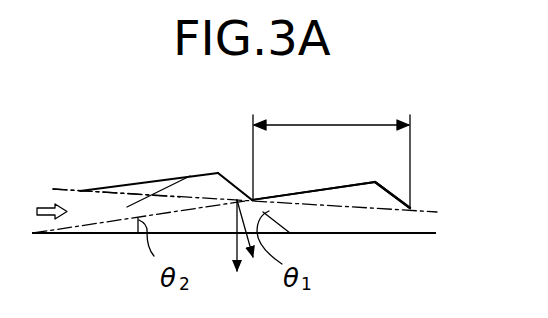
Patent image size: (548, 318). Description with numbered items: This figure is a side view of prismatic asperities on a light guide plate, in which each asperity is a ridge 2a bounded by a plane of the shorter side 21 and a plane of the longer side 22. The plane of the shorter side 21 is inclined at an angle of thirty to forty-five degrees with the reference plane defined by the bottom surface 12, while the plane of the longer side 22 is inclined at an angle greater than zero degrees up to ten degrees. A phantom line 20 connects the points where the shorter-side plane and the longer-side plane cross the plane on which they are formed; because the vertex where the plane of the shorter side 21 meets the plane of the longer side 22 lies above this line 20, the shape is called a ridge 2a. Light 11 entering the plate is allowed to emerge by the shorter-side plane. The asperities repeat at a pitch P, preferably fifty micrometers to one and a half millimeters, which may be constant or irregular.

The ridge 2a is at (211, 172).
The incident light 11 is at (141, 172).
The bottom surface 12 is at (377, 234).
The line 20 is at (437, 212).
The plane of the shorter side 21 is at (397, 197).
The plane of the longer side 22 is at (304, 190).
The repeating pitch P is at (331, 151).